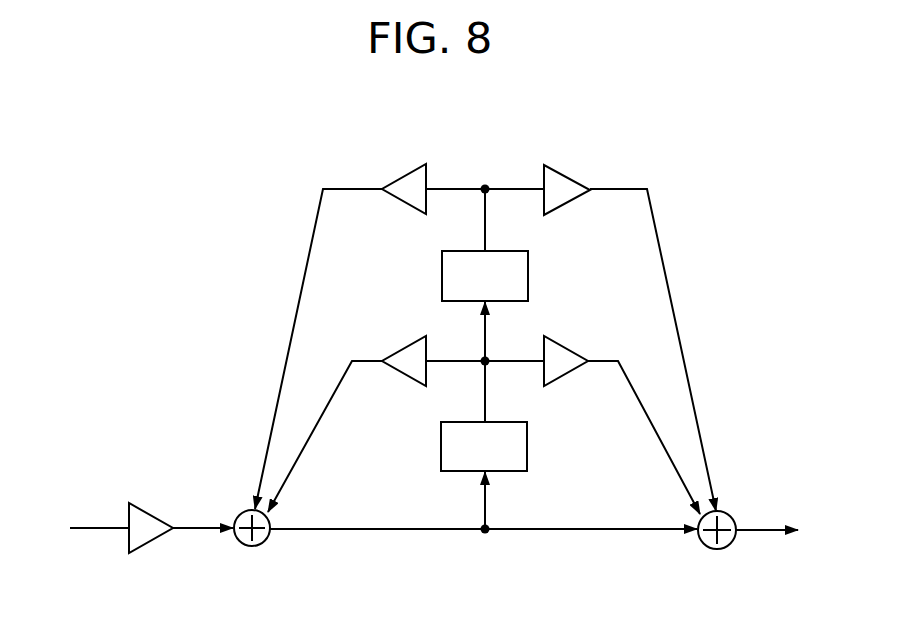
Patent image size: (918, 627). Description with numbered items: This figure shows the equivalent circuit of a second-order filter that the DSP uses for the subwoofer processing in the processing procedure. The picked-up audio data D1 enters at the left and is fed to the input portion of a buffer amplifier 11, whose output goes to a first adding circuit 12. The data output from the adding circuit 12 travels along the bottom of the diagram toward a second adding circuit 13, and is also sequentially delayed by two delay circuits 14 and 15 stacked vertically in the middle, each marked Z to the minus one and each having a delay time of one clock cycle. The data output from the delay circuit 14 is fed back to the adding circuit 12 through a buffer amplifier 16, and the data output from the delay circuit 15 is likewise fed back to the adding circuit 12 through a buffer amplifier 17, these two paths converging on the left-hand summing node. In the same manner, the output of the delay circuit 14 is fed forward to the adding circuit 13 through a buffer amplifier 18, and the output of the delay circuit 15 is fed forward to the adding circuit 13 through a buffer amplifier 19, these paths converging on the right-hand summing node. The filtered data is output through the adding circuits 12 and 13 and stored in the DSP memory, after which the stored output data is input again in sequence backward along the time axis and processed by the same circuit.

The picked-up audio data D1 is at (102, 526).
The buffer amplifier 11 is at (157, 540).
The adding circuit 12 is at (238, 514).
The adding circuit 13 is at (733, 516).
The delay circuit 14 is at (528, 445).
The delay circuit 15 is at (529, 272).
The buffer amplifier 16 is at (400, 346).
The buffer amplifier 17 is at (406, 174).
The buffer amplifier 18 is at (570, 341).
The buffer amplifier 19 is at (570, 177).